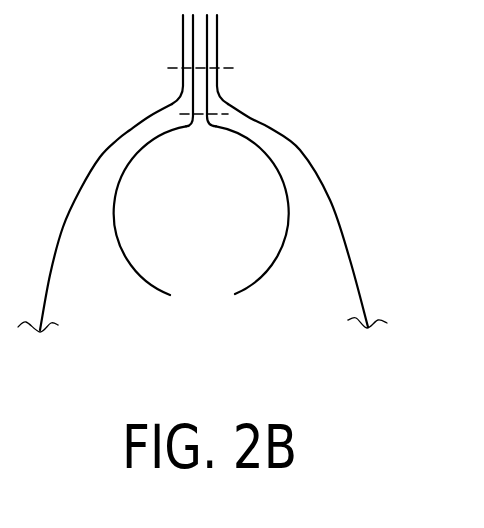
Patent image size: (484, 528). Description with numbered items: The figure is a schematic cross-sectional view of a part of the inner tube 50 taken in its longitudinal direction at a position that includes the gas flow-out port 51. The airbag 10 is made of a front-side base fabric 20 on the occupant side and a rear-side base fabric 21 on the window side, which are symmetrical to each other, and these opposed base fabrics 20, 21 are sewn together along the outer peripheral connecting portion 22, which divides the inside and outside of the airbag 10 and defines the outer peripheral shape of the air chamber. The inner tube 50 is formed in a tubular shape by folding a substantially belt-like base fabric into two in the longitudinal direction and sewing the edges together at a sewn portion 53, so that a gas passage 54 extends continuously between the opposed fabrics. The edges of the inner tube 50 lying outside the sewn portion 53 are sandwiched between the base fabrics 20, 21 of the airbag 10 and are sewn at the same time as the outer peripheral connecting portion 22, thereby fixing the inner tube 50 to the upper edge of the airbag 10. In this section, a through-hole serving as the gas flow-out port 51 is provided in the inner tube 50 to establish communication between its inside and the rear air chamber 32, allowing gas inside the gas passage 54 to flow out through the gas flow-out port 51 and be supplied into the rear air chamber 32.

The airbag 10 is at (128, 128).
The front-side base fabric 20 is at (63, 227).
The rear-side base fabric 21 is at (302, 150).
The outer peripheral connecting portion 22 is at (229, 66).
The rear air chamber 32 is at (117, 303).
The inner tube 50 is at (290, 207).
The gas flow-out port 51 is at (200, 300).
The sewn portion 53 is at (184, 113).
The gas passage 54 is at (257, 262).